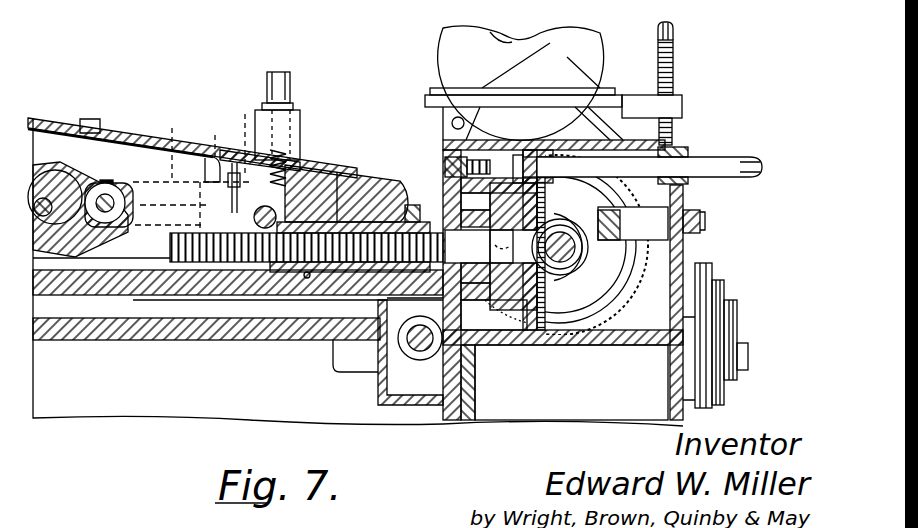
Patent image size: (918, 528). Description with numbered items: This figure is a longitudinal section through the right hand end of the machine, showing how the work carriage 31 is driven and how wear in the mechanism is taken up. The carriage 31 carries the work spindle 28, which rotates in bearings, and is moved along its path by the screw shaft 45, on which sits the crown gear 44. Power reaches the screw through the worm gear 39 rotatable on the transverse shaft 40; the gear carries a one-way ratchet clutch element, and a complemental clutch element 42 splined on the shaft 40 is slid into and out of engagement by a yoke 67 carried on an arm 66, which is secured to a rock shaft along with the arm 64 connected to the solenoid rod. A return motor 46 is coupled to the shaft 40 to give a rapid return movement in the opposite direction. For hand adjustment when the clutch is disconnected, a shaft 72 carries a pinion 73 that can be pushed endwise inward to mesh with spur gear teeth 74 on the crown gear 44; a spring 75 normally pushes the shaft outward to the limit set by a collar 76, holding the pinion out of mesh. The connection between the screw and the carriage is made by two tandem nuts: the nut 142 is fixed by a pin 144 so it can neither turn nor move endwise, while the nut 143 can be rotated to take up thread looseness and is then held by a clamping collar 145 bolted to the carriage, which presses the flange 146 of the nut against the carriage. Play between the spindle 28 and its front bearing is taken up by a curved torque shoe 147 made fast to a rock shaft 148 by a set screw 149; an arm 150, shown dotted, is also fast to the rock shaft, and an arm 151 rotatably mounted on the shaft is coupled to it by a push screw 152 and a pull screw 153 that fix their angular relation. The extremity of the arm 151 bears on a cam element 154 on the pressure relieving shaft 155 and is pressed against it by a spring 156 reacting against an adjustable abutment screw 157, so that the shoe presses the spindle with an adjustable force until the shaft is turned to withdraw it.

The spindle 28 is at (42, 177).
The carriage 31 is at (88, 120).
The arm 151 is at (174, 138).
The pull screw 153 is at (209, 144).
The push screw 152 is at (246, 134).
The adjustable abutment screw 157 is at (285, 130).
The spring 156 is at (297, 180).
The cam element 154 is at (236, 172).
The screw shaft 45 is at (340, 217).
The flange 146 is at (410, 206).
The clamping collar 145 is at (400, 223).
The nut 142 is at (288, 277).
The pressure relieving shaft 155 is at (255, 241).
The pin 144 is at (307, 278).
The nut 143 is at (373, 270).
The torque shoe 147 is at (58, 250).
The arm 150 is at (150, 232).
The set screw 149 is at (115, 170).
The rock shaft 148 is at (122, 186).
The return motor 46 is at (583, 42).
The spring 75 is at (446, 166).
The spur gear teeth 74 is at (520, 155).
The pinion 73 is at (540, 152).
The worm gear 39 is at (640, 300).
The clutch element 42 is at (583, 264).
The yoke 67 is at (570, 221).
The transverse shaft 40 is at (562, 262).
The arm 66 is at (608, 231).
The shaft 72 is at (722, 165).
The collar 76 is at (676, 150).
The arm 64 is at (696, 211).
The crown gear 44 is at (532, 323).